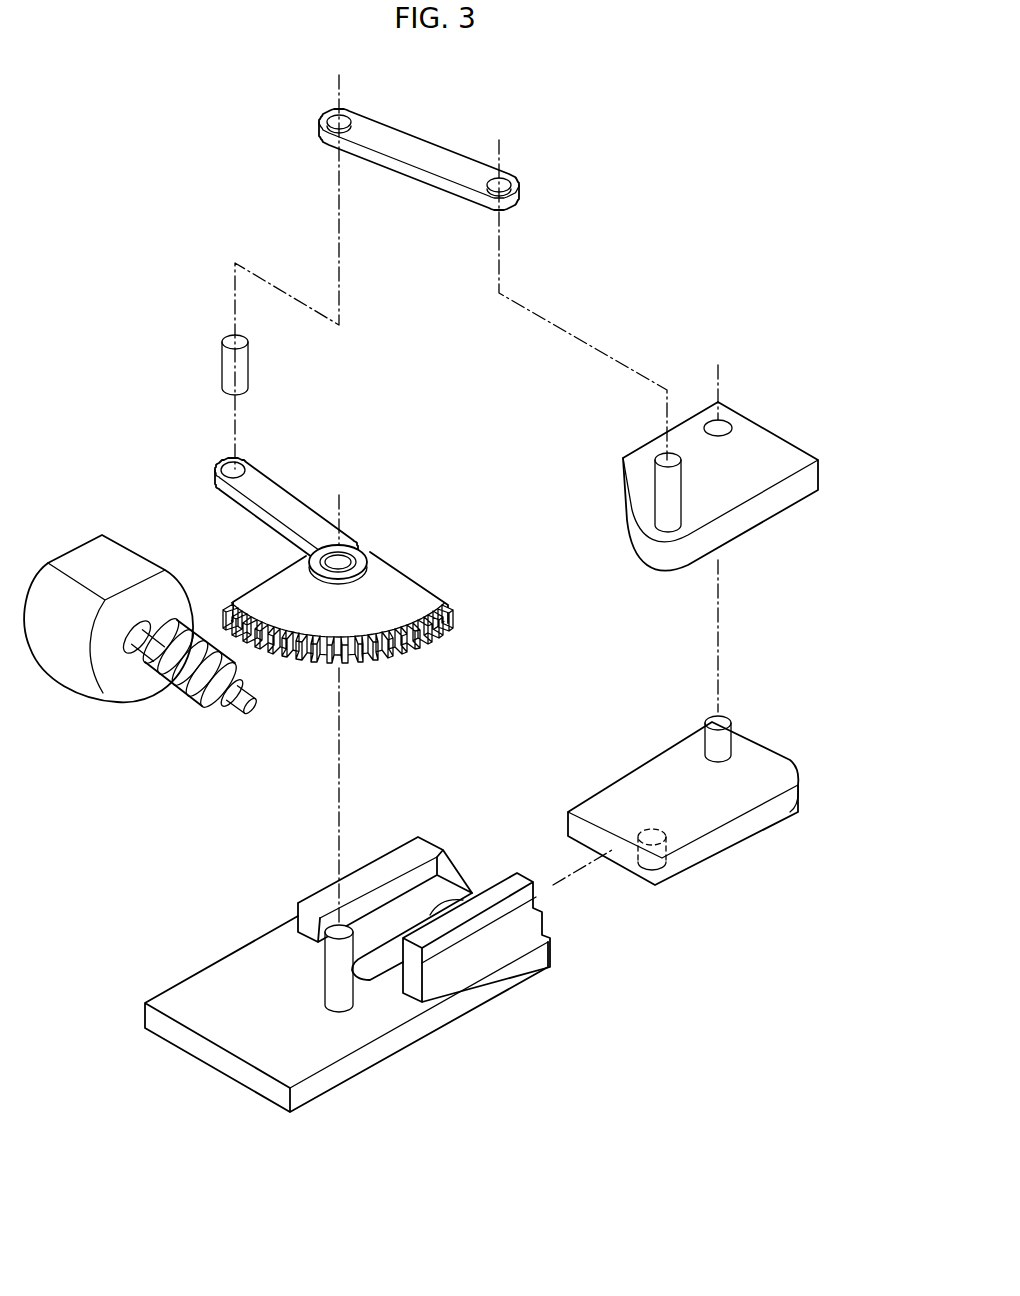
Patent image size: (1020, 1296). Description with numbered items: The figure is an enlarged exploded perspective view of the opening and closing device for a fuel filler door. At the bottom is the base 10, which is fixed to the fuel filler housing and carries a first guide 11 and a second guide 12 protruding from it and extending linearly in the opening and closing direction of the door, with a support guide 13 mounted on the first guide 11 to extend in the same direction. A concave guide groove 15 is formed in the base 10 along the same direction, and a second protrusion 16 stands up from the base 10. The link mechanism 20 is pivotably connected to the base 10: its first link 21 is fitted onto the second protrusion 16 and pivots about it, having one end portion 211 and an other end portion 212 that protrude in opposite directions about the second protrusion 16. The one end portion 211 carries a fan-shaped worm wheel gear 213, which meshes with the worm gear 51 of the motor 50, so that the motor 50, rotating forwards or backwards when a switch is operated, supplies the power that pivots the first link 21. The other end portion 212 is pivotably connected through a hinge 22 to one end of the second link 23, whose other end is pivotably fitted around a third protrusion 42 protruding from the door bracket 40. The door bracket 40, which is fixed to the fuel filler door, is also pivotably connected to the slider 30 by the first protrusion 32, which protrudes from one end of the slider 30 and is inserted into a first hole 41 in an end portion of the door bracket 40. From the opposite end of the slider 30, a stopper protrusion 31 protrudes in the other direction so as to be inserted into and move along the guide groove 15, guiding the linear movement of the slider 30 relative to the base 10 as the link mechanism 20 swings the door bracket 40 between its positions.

The base 10 is at (347, 964).
The first guide 11 is at (450, 983).
The second guide 12 is at (410, 855).
The support guide 13 is at (510, 918).
The guide groove 15 is at (370, 958).
The second protrusion 16 is at (338, 995).
The link mechanism 20 is at (315, 571).
The first link 21 is at (269, 490).
The hinge 22 is at (225, 367).
The second link 23 is at (410, 147).
The slider 30 is at (685, 814).
The stopper protrusion 31 is at (662, 872).
The first protrusion 32 is at (728, 722).
The door bracket 40 is at (699, 464).
The first hole 41 is at (727, 430).
The third protrusion 42 is at (660, 500).
The motor 50 is at (141, 655).
The worm gear 51 is at (186, 688).
The one end portion 211 is at (368, 639).
The other end portion 212 is at (258, 478).
The fan-shaped worm wheel gear 213 is at (405, 660).